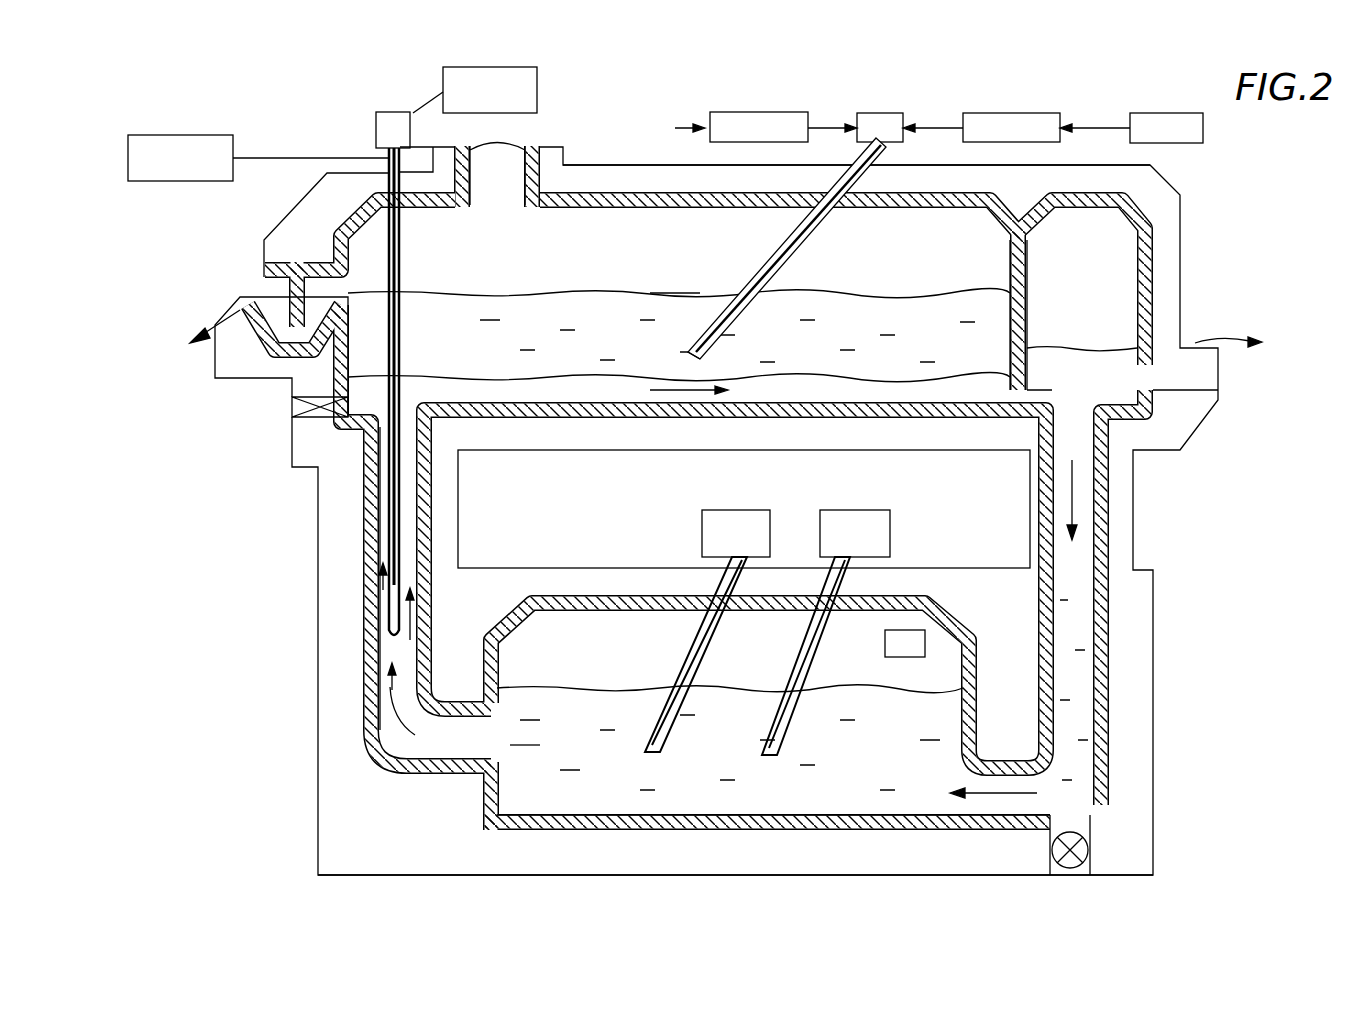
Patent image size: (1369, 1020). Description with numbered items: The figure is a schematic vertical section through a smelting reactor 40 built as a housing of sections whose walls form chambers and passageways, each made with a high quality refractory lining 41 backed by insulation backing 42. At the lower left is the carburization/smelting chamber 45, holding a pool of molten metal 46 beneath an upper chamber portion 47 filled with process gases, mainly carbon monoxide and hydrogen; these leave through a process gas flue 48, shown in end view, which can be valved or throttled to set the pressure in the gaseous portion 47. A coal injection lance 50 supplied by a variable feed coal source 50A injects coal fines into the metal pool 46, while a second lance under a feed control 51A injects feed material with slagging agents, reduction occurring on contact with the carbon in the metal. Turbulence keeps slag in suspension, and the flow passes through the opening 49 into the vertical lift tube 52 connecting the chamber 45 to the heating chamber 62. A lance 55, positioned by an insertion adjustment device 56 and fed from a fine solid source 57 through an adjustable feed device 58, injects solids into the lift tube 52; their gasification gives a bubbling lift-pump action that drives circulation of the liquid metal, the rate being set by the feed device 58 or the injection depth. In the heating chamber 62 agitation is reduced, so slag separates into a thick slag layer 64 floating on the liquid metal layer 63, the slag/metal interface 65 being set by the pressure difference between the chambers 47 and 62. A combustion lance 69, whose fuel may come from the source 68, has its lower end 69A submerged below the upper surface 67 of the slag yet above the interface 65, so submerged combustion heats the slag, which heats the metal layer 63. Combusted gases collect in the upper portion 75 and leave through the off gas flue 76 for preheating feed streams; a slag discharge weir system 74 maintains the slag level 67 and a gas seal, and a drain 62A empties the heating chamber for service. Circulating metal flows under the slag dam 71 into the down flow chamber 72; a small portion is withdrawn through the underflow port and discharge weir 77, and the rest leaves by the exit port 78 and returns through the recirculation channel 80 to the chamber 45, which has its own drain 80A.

The smelting reactor 40 is at (305, 668).
The refractory lining 41 is at (362, 728).
The insulation backing 42 is at (332, 816).
The carburization/smelting chamber 45 is at (700, 793).
The molten metal pool 46 is at (718, 727).
The upper chamber portion 47 is at (770, 674).
The process gas flue 48 is at (884, 648).
The opening 49 is at (545, 725).
The coal injection lance 50 is at (685, 665).
The variable feed coal source 50A is at (700, 530).
The feed control 51A is at (893, 525).
The lift tube 52 is at (390, 660).
The lance 55 is at (388, 562).
The insertion adjustment device 56 is at (140, 182).
The fine solid source 57 is at (377, 113).
The adjustable feed device 58 is at (535, 70).
The heating chamber 62 is at (482, 247).
The drain 62A is at (300, 407).
The liquid metal layer 63 is at (518, 393).
The slag layer 64 is at (472, 330).
The slag/metal interface 65 is at (555, 380).
The upper surface of the slag 67 is at (673, 293).
The fuel source 68 is at (1203, 138).
The combustion lance 69 is at (797, 248).
The lower end of combustion lance 69A is at (688, 355).
The slag dam 71 is at (1022, 285).
The down flow chamber 72 is at (1110, 255).
The slag discharge weir system 74 is at (250, 293).
The upper portion of heating chamber 75 is at (533, 233).
The off gas flue 76 is at (497, 157).
The underflow port and discharge weir 77 is at (1193, 363).
The exit port 78 is at (1070, 418).
The recirculation channel 80 is at (1073, 565).
The drain 80A is at (1068, 868).